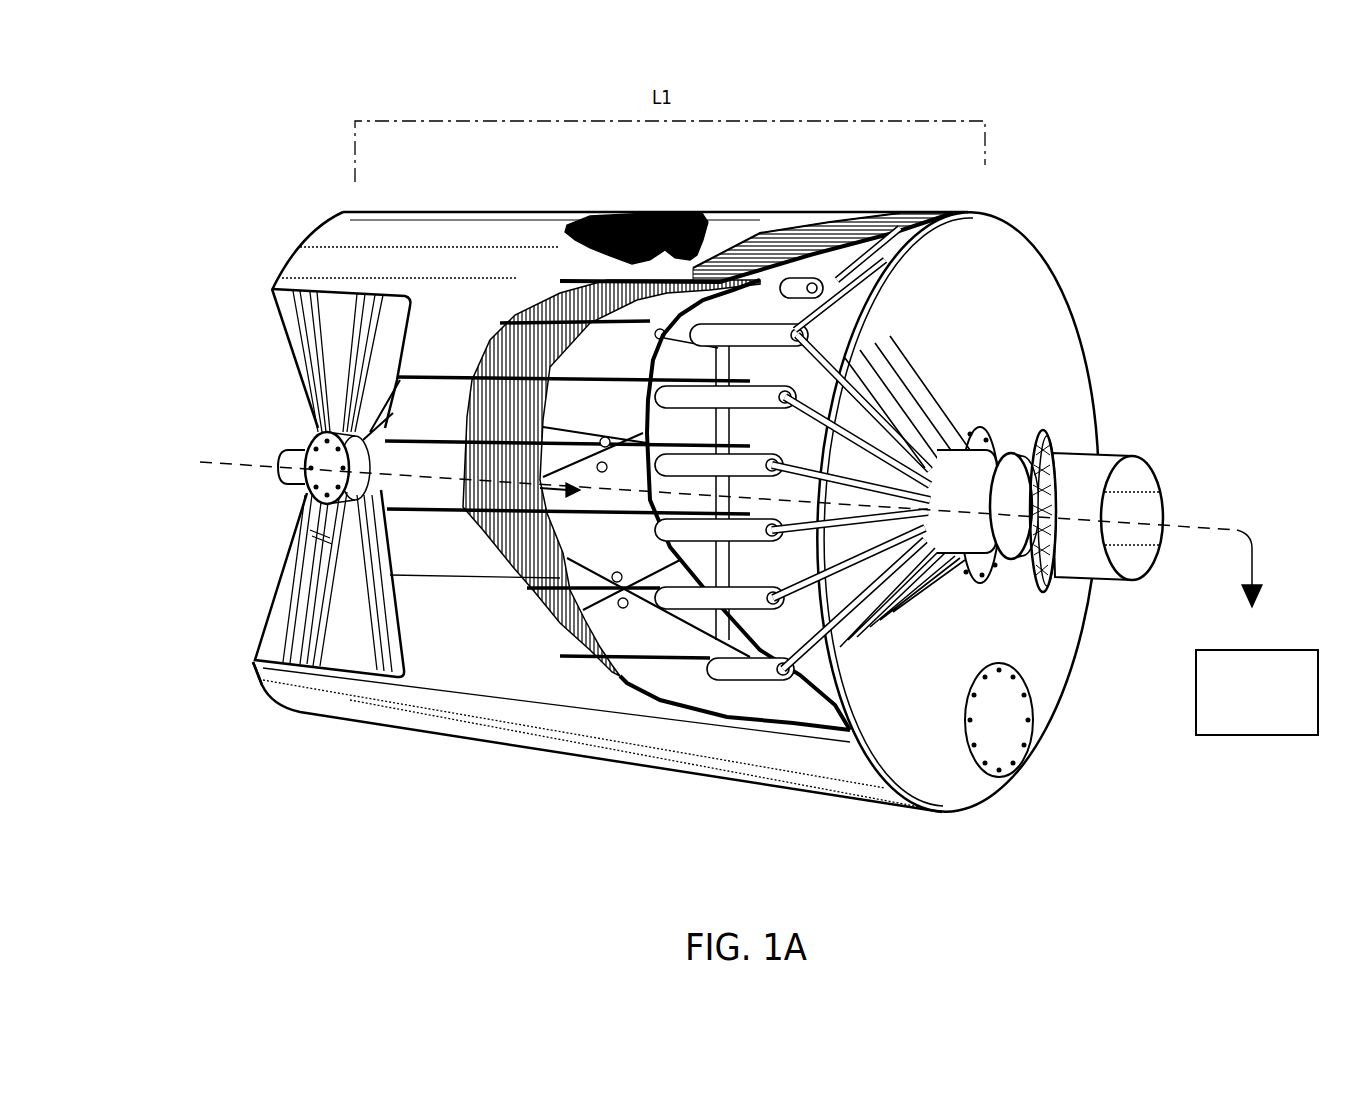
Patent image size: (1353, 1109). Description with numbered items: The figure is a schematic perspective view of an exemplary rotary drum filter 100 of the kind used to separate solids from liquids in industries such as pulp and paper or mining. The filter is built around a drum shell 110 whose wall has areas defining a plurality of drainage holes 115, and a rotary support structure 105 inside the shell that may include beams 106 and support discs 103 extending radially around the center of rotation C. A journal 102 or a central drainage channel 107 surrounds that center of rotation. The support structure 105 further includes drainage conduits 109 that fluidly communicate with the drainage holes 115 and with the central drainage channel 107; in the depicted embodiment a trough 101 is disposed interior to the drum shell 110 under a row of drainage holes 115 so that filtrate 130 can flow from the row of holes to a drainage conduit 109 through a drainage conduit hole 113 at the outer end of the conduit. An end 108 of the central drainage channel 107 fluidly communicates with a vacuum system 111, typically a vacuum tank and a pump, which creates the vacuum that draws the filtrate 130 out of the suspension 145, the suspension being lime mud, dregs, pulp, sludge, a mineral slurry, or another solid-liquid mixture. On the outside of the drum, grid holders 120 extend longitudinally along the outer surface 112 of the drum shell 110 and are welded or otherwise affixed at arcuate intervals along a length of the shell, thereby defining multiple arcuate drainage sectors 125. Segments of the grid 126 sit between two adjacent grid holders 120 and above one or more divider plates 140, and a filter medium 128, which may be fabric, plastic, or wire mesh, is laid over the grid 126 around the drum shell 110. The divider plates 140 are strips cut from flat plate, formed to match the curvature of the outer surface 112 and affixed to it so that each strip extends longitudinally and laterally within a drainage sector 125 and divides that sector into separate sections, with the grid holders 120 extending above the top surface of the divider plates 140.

The rotary drum filter 100 is at (158, 156).
The trough 101 is at (697, 462).
The journal 102 is at (290, 478).
The support discs 103 is at (797, 377).
The rotary support structure 105 is at (277, 377).
The beams 106 is at (340, 427).
The central drainage channel 107 is at (989, 491).
The end of the central drainage channel 108 is at (1090, 501).
The drainage conduits 109 is at (860, 398).
The drum shell 110 is at (807, 688).
The vacuum system 111 is at (1272, 705).
The outer surface 112 is at (555, 489).
The drainage conduit hole 113 is at (805, 322).
The drainage holes 115 is at (625, 608).
The grid holders 120 is at (625, 382).
The arcuate drainage sectors 125 is at (274, 251).
The grid 126 is at (560, 307).
The filter medium 128 is at (440, 232).
The filtrate 130 is at (1226, 510).
The divider plates 140 is at (563, 430).
The suspension 145 is at (662, 222).